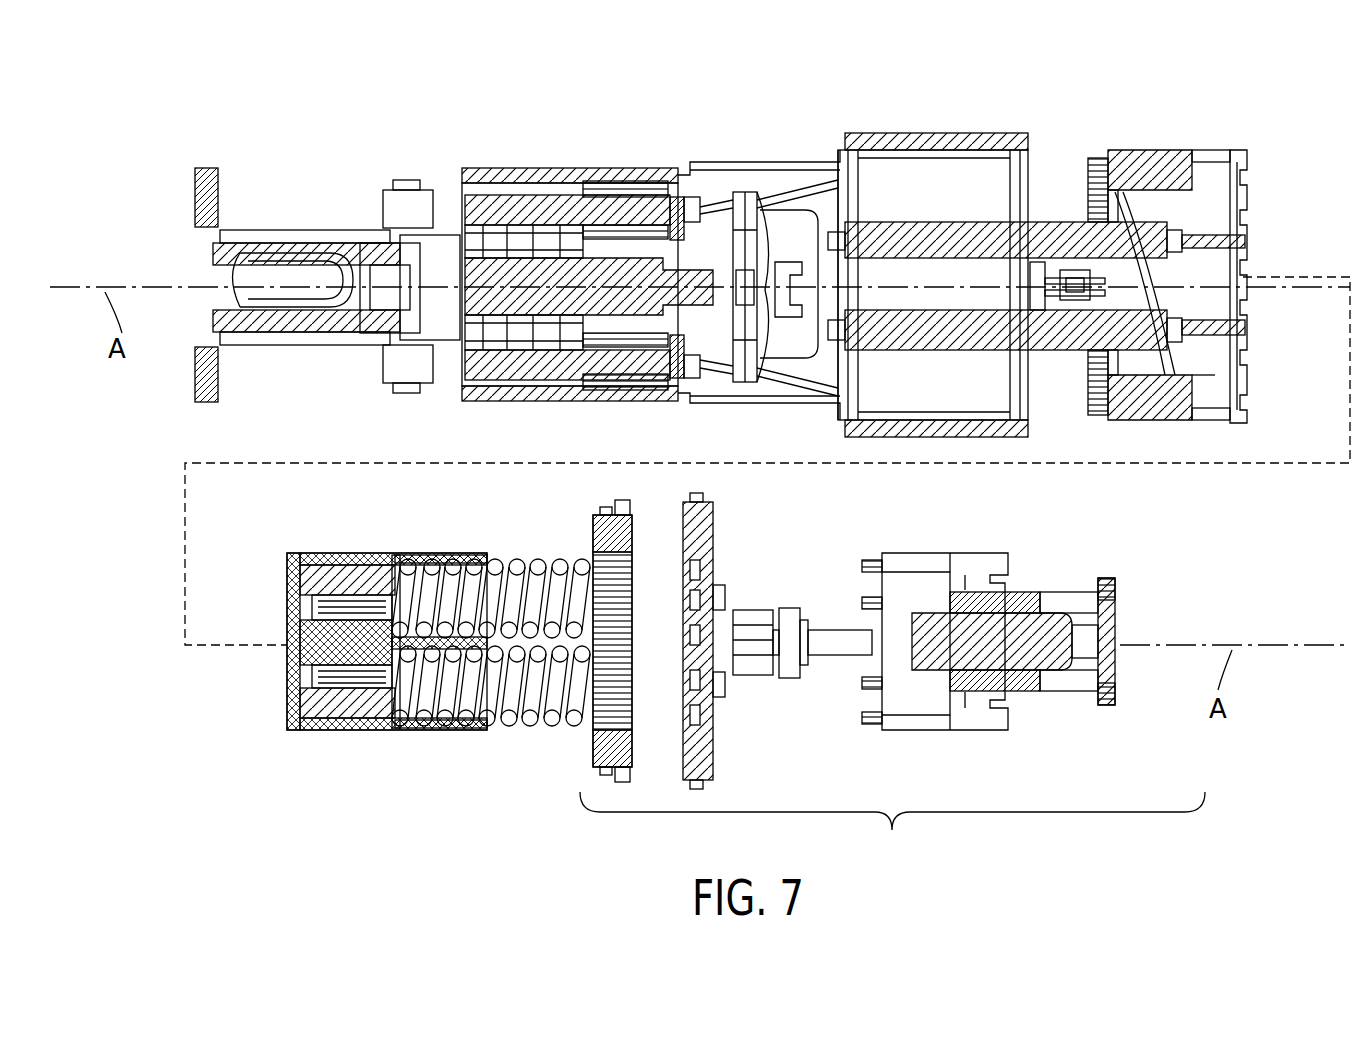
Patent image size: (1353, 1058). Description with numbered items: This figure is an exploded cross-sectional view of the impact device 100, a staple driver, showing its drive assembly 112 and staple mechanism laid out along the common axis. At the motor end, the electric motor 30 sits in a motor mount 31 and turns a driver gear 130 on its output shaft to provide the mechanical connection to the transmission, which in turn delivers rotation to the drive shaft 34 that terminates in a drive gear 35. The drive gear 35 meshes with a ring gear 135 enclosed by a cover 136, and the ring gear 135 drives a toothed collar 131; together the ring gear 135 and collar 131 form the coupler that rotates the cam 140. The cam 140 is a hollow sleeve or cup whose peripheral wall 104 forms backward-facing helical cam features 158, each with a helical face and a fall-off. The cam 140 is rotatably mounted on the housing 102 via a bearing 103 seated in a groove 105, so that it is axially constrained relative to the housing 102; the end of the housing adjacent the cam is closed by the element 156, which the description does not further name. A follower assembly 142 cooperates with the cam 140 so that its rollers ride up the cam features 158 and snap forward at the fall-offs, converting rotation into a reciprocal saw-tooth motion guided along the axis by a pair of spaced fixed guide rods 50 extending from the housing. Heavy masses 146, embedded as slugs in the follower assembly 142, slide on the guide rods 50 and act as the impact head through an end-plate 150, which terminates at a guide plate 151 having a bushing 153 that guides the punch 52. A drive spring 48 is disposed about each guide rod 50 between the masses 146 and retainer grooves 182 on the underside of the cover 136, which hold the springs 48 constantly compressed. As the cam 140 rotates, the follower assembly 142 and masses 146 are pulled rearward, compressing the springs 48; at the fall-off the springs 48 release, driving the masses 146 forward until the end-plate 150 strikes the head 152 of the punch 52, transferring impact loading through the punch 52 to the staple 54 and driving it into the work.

The impact device 100 is at (1283, 113).
The housing 102 is at (887, 130).
The bearing 103 is at (1095, 415).
The peripheral wall 104 is at (1218, 420).
The groove 105 is at (845, 407).
The drive assembly 112 is at (892, 831).
The driver gear 130 is at (1115, 592).
The collar 131 is at (598, 535).
The ring gear 135 is at (630, 625).
The cover 136 is at (710, 762).
The cam 140 is at (1165, 170).
The follower assembly 142 is at (470, 560).
The masses 146 is at (345, 570).
The end-plate 150 is at (292, 560).
The guide plate 151 is at (745, 190).
The head 152 is at (680, 260).
The bushing 153 is at (792, 250).
The end cap 156 is at (1252, 197).
The cam features 158 is at (1165, 283).
The retainer grooves 182 is at (695, 568).
The electric motor 30 is at (1045, 625).
The motor mount 31 is at (935, 722).
The drive shaft 34 is at (815, 632).
The drive gear 35 is at (755, 604).
The drive spring 48 is at (432, 565).
The guide rods 50 is at (1043, 233).
The punch 52 is at (585, 275).
The fasteners 54 is at (292, 265).